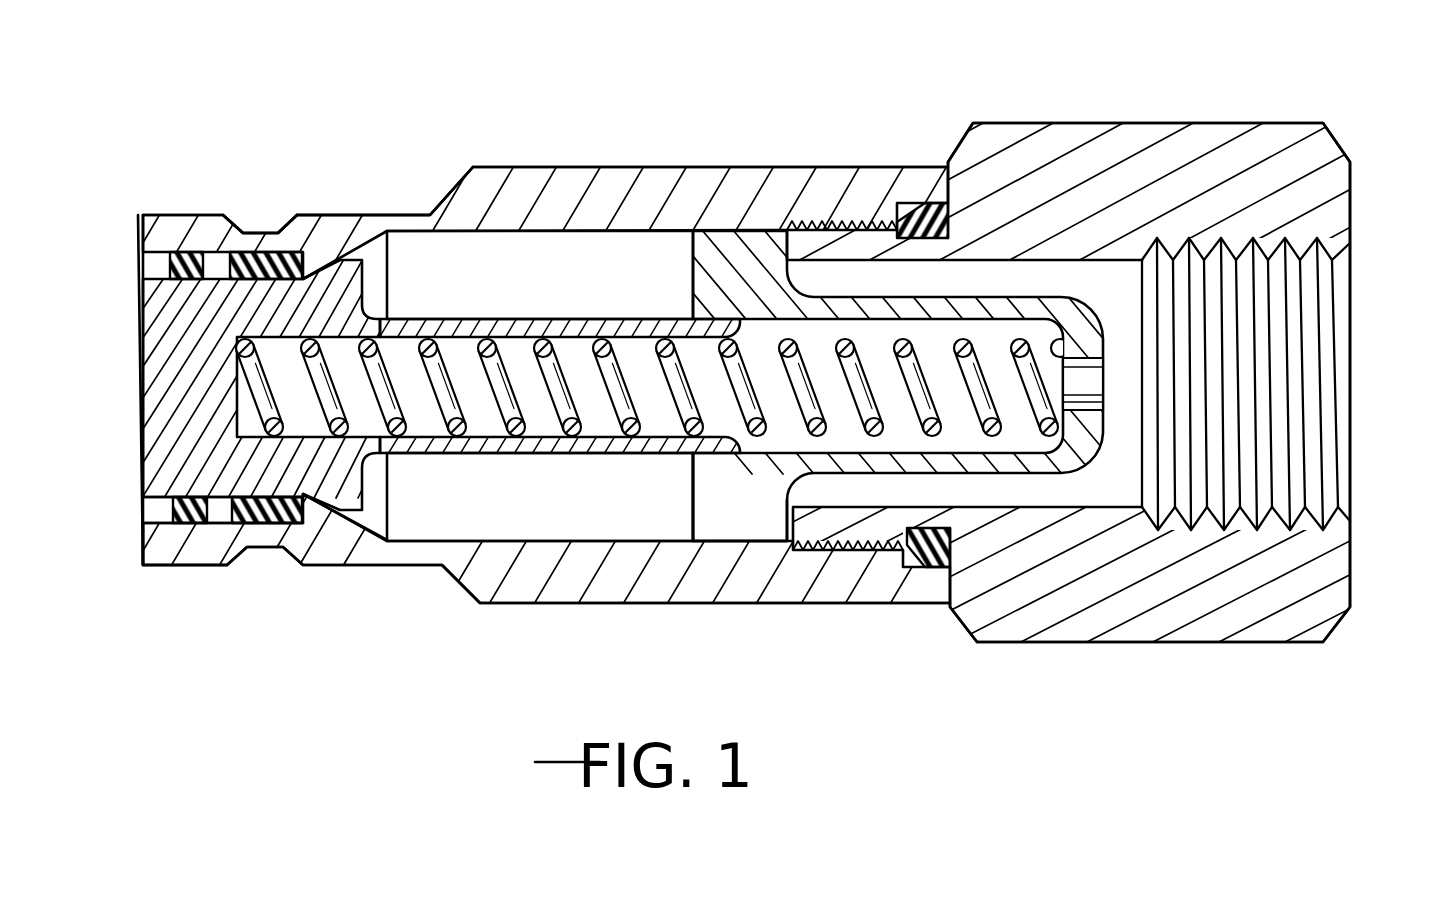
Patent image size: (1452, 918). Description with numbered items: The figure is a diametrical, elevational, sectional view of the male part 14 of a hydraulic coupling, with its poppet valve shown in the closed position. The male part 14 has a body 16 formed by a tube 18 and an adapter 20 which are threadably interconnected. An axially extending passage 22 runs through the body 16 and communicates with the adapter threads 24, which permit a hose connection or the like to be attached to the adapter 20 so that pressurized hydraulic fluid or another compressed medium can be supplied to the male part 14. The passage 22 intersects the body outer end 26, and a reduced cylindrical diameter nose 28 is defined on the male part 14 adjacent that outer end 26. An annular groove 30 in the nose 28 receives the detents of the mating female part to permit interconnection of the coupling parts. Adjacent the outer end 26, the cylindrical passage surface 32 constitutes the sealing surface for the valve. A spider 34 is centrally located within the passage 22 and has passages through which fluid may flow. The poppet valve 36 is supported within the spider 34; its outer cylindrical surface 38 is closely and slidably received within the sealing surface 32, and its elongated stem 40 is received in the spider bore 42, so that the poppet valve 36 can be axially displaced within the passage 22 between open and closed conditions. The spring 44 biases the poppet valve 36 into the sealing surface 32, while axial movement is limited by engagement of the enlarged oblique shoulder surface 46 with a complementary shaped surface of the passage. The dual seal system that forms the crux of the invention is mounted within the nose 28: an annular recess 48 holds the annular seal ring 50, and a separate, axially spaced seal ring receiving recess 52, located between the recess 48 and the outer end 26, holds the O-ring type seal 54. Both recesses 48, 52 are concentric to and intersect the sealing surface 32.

The male part 14 is at (826, 98).
The body 16 is at (833, 167).
The tube 18 is at (658, 605).
The adapter 20 is at (1103, 643).
The passage 22 is at (540, 540).
The adapter threads 24 is at (1346, 397).
The body outer end 26 is at (137, 250).
The nose 28 is at (366, 226).
The annular groove 30 is at (256, 231).
The cylindrical passage surface 32 is at (145, 525).
The spider 34 is at (716, 492).
The poppet valve 36 is at (156, 372).
The outer cylindrical surface 38 is at (157, 500).
The stem 40 is at (505, 318).
The spider bore 42 is at (938, 323).
The spring 44 is at (498, 405).
The enlarged oblique shoulder surface 46 is at (335, 498).
The annular recess 48 is at (262, 526).
The annular seal ring 50 is at (305, 256).
The seal ring receiving recess 52 is at (188, 526).
The O-ring type seal 54 is at (188, 252).